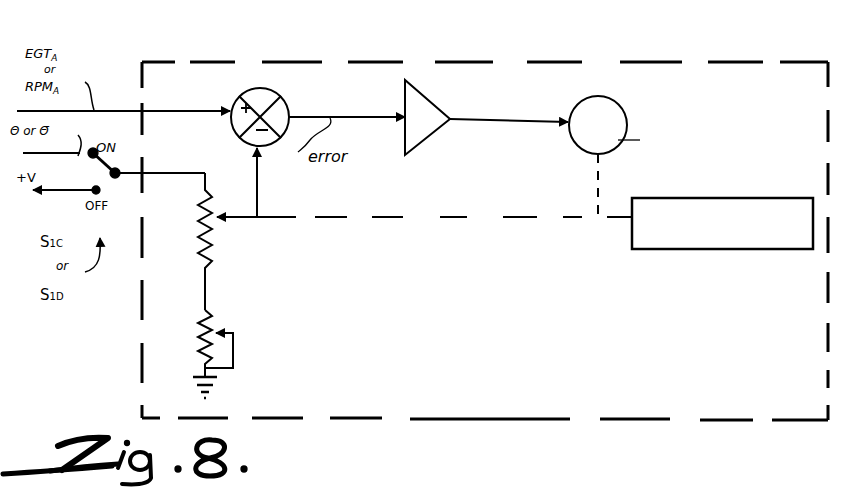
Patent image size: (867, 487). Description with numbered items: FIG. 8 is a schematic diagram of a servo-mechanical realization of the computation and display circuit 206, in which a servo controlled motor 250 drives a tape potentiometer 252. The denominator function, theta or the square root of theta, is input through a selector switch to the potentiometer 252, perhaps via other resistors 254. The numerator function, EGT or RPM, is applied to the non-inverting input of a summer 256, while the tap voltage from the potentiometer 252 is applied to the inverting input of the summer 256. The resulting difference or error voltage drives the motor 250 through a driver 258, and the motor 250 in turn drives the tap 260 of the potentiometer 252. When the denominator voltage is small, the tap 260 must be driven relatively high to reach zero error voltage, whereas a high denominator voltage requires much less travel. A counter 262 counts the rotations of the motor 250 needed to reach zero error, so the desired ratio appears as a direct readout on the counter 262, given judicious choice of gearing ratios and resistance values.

The computation and display circuit 206 is at (588, 419).
The servo controlled motor 250 is at (610, 106).
The tape potentiometer 252 is at (212, 262).
The other resistors 254 is at (196, 340).
The summer 256 is at (274, 93).
The driver 258 is at (430, 101).
The tap 260 is at (245, 220).
The counter 262 is at (779, 178).